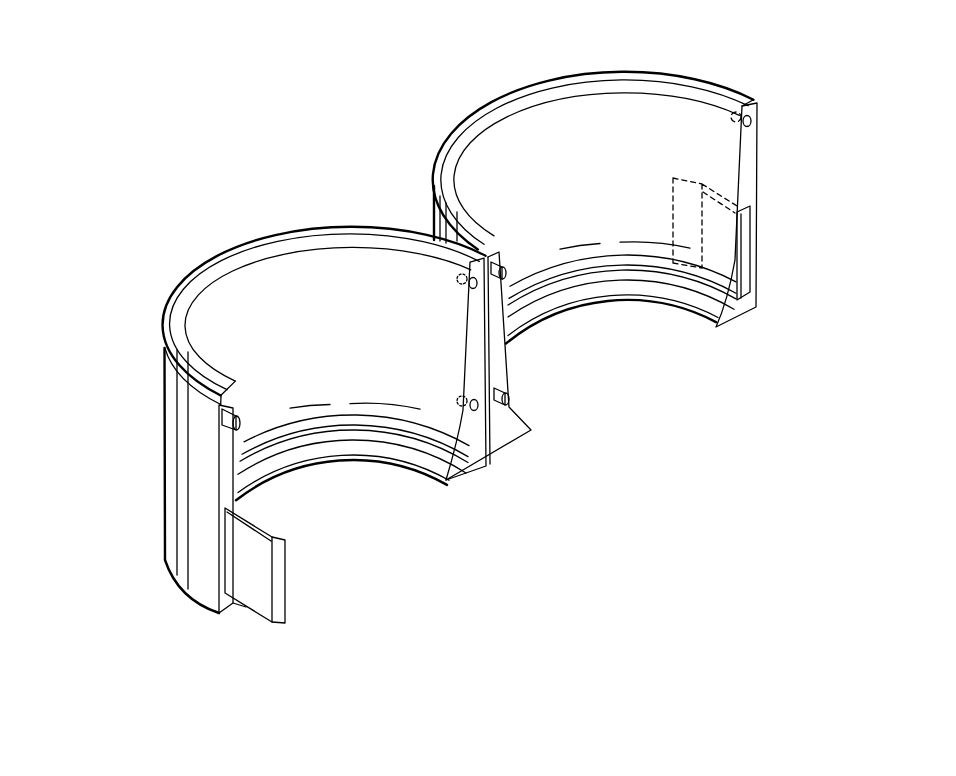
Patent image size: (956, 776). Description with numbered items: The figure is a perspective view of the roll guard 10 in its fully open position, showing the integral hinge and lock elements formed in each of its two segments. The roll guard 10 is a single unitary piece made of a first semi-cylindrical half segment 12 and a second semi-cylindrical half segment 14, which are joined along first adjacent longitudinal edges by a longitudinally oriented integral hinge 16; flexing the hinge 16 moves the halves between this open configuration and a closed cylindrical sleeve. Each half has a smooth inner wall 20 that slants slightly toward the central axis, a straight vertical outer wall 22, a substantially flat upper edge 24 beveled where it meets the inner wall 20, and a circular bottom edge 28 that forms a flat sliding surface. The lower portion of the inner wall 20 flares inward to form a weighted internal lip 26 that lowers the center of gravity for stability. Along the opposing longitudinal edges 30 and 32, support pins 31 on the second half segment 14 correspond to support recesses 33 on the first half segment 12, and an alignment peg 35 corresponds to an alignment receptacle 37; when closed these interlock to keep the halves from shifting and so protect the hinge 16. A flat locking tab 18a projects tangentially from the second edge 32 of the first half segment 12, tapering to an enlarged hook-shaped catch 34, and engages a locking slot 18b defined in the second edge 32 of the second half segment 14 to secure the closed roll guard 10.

The roll guard 10 is at (113, 176).
The first semi-cylindrical half segment 12 is at (193, 277).
The second semi-cylindrical half segment 14 is at (765, 95).
The integral hinge 16 is at (489, 425).
The locking tab 18a is at (255, 625).
The locking slot 18b is at (750, 235).
The inner wall 20 is at (670, 107).
The outer wall 22 is at (176, 522).
The upper edge 24 is at (268, 237).
The weighted internal lip 26 is at (408, 452).
The bottom edge 28 is at (685, 320).
The longitudinal edge 30 is at (470, 432).
The support pins 31 is at (485, 288).
The second edge 32 is at (225, 476).
The support recesses 33 is at (502, 275).
The catch 34 is at (288, 579).
The alignment peg 35 is at (226, 418).
The alignment receptacle 37 is at (758, 118).